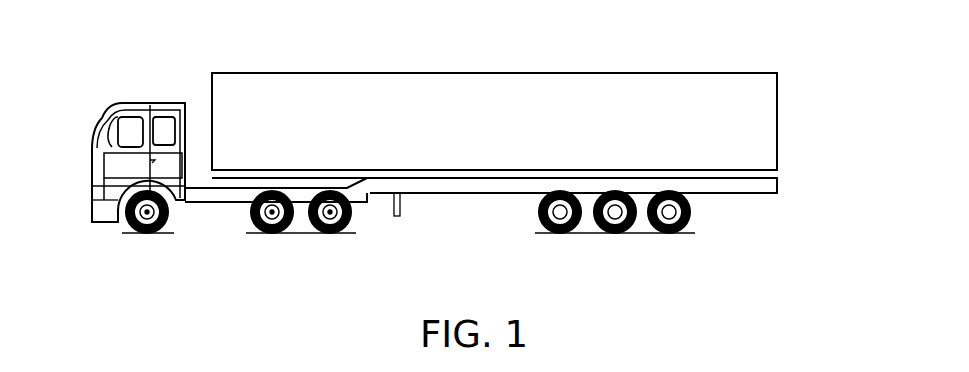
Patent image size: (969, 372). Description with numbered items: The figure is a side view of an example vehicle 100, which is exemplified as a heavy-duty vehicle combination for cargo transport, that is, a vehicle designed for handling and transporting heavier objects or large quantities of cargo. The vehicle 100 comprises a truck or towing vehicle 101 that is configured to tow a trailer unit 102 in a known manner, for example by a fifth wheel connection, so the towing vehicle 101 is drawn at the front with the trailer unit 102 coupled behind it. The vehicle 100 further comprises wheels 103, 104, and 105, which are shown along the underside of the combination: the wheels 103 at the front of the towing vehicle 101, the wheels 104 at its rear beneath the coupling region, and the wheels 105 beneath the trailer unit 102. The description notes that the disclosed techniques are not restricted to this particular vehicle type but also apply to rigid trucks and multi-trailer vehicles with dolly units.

The vehicle 100 is at (170, 44).
The truck or towing vehicle 101 is at (103, 94).
The trailer unit 102 is at (516, 55).
The wheels 103 is at (118, 244).
The wheels 104 is at (256, 244).
The wheels 105 is at (536, 246).